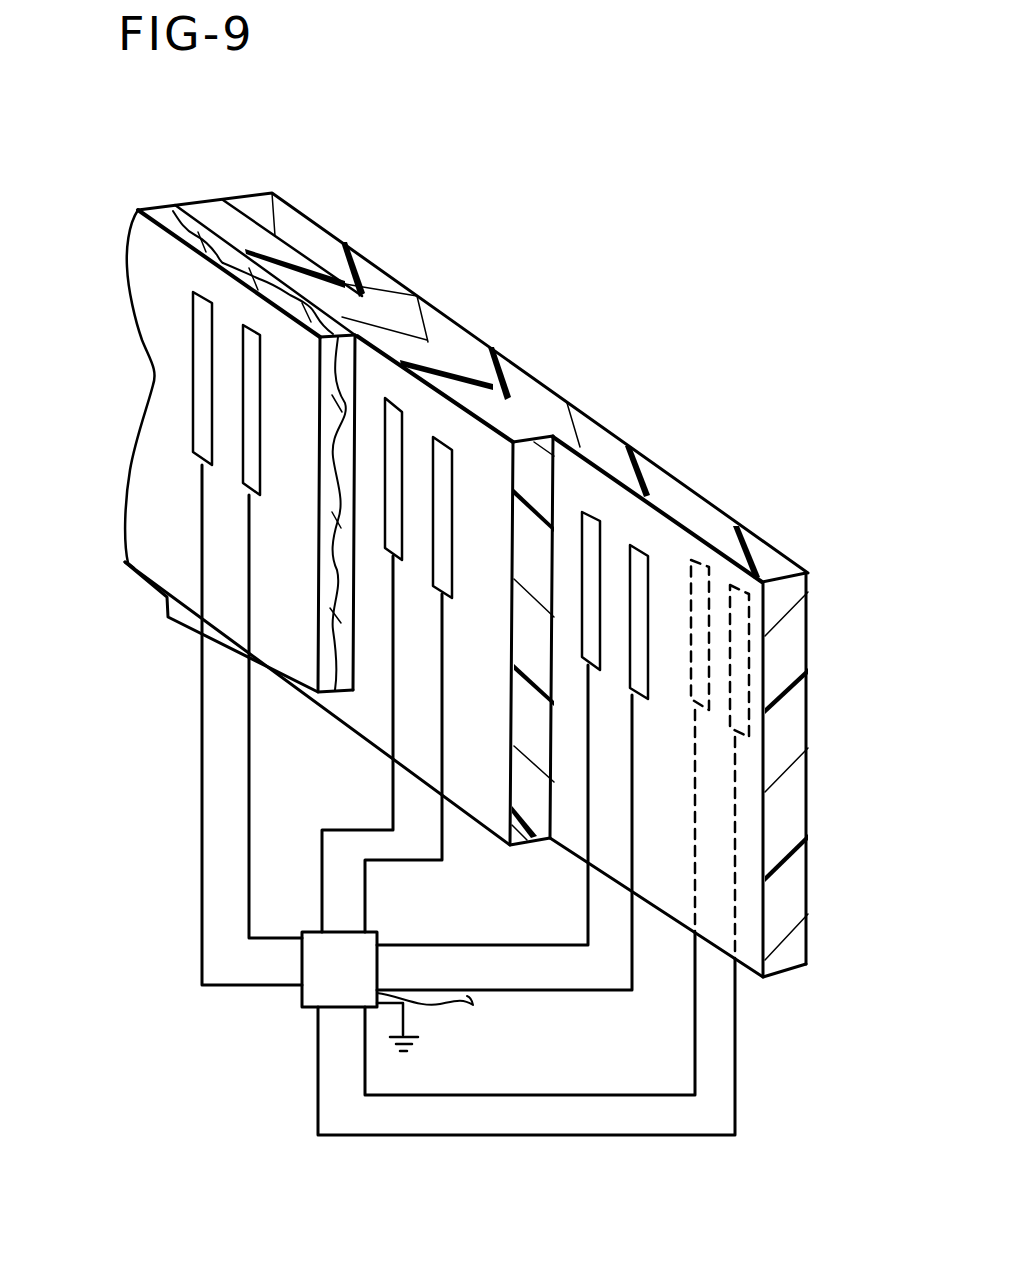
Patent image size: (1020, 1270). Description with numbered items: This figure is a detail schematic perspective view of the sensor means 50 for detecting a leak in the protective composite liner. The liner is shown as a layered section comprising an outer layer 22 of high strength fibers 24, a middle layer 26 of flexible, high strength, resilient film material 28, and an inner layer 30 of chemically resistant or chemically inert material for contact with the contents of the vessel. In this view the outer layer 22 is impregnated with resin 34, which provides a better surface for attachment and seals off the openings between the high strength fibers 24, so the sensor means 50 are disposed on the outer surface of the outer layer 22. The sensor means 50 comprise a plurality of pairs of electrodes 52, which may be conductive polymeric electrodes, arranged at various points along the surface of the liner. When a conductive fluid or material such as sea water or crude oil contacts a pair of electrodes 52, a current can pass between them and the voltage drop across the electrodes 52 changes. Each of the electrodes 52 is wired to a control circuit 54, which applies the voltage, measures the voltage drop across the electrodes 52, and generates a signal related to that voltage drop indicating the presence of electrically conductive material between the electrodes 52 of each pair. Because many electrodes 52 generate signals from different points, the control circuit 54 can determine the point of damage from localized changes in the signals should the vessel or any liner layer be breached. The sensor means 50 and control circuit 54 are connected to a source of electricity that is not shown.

The outer layer 22 is at (146, 198).
The high strength fibers 24 is at (173, 211).
The middle layer 26 is at (200, 190).
The film material 28 is at (365, 312).
The inner layer 30 is at (294, 196).
The resin 34 is at (262, 280).
The sensor means 50 is at (119, 826).
The electrodes 52 is at (247, 390).
The control circuits 54 is at (358, 983).